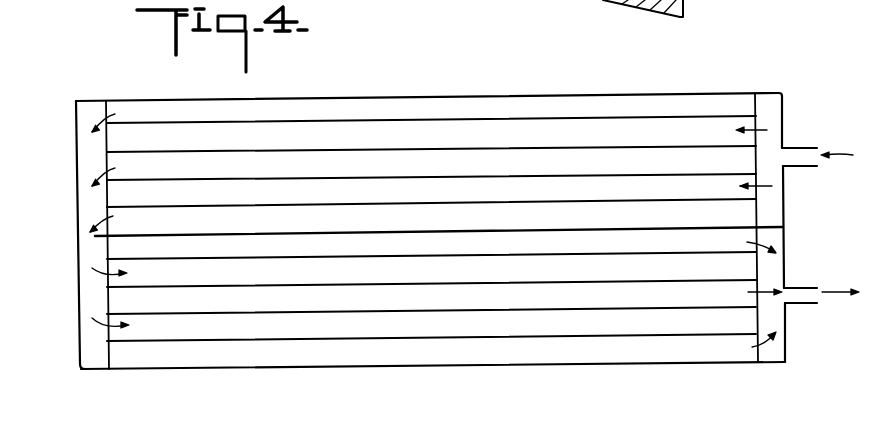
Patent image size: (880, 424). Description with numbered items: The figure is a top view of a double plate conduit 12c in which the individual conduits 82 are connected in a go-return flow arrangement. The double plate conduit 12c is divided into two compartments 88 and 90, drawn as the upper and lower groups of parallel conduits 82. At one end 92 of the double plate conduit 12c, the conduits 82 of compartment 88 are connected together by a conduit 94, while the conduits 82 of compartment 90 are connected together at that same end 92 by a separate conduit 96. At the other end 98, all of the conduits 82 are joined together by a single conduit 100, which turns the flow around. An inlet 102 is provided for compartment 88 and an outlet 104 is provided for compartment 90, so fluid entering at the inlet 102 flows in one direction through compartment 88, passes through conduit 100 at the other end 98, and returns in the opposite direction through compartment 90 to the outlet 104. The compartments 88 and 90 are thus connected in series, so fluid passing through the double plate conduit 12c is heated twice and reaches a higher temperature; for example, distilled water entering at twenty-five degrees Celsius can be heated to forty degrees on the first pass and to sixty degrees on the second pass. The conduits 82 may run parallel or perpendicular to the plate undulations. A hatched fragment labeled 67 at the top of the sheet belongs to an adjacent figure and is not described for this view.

The compartment 88 is at (450, 88).
The double plate conduit 12c is at (386, 88).
The conduit 100 is at (81, 172).
The other end 98 is at (90, 103).
The end 92 is at (772, 90).
The conduits 82 is at (586, 130).
The compartment 90 is at (535, 346).
The conduit 94 is at (786, 185).
The conduit 96 is at (786, 250).
The inlet 102 is at (795, 147).
The outlet 104 is at (805, 305).
The wall fragment 67 is at (591, 0).